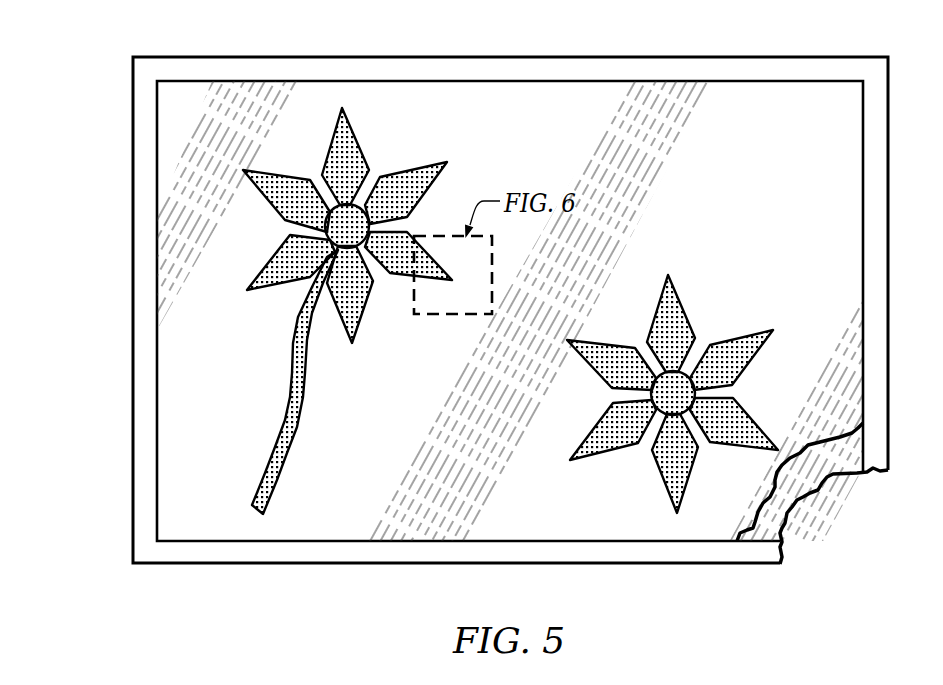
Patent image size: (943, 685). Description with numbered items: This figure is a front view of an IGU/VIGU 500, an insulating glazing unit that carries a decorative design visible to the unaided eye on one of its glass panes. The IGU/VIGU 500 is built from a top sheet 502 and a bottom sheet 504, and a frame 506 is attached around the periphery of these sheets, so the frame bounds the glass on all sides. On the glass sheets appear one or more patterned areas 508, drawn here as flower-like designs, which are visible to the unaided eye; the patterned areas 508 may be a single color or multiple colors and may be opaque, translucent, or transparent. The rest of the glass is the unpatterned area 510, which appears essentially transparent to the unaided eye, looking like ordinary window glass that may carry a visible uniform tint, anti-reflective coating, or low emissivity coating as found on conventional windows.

The IGU/VIGU 500 is at (112, 143).
The top sheet 502 is at (727, 527).
The bottom sheet 504 is at (824, 486).
The frame 506 is at (346, 66).
The patterned areas 508 is at (270, 320).
The unpatterned area 510 is at (555, 127).